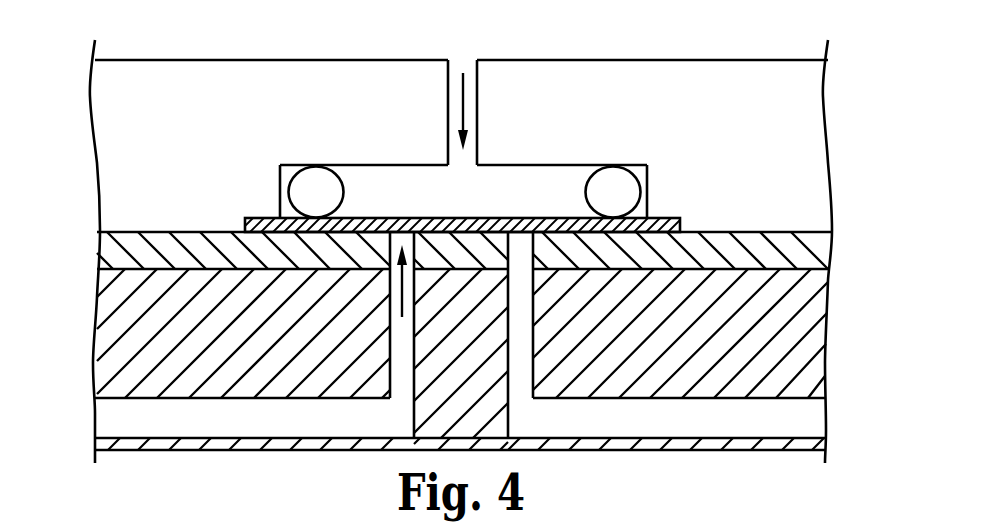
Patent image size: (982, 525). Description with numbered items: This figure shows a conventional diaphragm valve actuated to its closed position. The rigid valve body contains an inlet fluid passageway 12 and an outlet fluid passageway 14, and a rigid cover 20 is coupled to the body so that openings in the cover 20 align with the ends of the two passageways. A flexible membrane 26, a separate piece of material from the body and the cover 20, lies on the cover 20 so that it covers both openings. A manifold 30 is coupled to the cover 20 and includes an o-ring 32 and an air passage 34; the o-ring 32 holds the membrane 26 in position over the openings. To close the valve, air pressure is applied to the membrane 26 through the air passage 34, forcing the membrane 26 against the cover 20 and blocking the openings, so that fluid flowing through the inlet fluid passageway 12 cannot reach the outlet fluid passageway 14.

The inlet fluid passageway 12 is at (125, 418).
The outlet fluid passageway 14 is at (820, 418).
The cover 20 is at (820, 250).
The flexible membrane 26 is at (672, 211).
The manifold 30 is at (461, 139).
The o-ring 32 is at (617, 185).
The air passage 34 is at (457, 70).